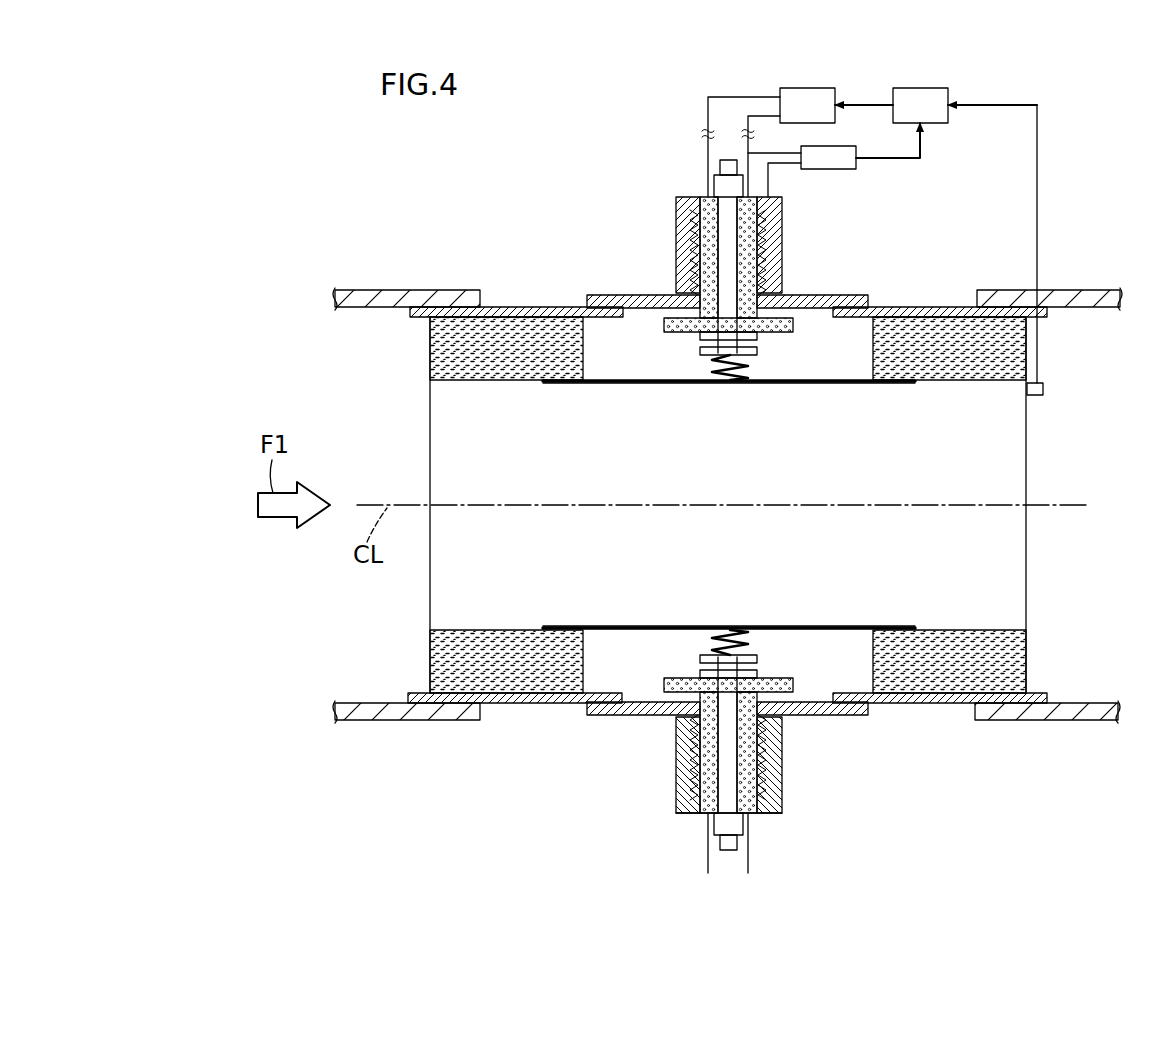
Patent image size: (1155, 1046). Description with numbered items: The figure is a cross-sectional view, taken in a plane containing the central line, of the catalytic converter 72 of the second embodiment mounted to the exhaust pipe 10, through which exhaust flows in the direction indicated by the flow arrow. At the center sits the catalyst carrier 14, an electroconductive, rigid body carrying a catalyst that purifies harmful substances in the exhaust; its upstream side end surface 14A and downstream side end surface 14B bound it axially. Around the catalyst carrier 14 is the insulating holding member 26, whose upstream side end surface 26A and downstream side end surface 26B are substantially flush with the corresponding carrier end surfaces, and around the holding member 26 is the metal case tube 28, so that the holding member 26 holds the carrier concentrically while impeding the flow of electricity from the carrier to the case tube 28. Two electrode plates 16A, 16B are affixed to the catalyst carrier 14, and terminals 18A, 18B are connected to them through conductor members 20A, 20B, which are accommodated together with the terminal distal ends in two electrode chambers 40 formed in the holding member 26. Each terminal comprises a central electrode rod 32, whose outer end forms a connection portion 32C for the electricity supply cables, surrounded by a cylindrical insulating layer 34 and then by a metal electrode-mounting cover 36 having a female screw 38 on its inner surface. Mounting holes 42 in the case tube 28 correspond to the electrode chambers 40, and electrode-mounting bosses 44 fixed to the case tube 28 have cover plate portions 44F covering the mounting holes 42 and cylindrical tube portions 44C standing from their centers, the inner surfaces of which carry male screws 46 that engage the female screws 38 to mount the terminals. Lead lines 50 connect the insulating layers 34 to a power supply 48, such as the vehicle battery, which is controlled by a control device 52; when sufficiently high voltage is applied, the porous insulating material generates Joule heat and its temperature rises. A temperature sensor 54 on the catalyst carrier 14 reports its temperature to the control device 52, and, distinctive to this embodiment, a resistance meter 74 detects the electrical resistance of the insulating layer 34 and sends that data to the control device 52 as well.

The exhaust pipe 10 is at (422, 290).
The case tube 28 is at (507, 720).
The catalyst carrier 14 is at (739, 505).
The upstream side end surface of catalyst carrier 14A is at (430, 420).
The downstream side end surface of catalyst carrier 14B is at (1027, 452).
The electrode plate 16A is at (882, 384).
The electrode plate 16B is at (863, 627).
The terminal 18A is at (733, 506).
The terminal 18B is at (687, 818).
The conductor member 20A is at (715, 367).
The conductor member 20B is at (722, 630).
The holding member 26 is at (737, 505).
The upstream side end surface of holding member 26A is at (430, 348).
The downstream side end surface of holding member 26B is at (1027, 675).
The electrode rod 32 is at (680, 506).
The connection portion 32C is at (720, 165).
The insulating layer 34 is at (700, 207).
The electrode-mounting cover 36 is at (783, 200).
The female screw 38 is at (693, 272).
The electrode chamber 40 is at (640, 349).
The mounting hole 42 is at (837, 317).
The electrode-mounting boss 44 is at (744, 509).
The cylindrical tube portion 44C is at (740, 505).
The cover plate portion 44F is at (603, 296).
The male screw 46 is at (770, 240).
The power supply 48 is at (808, 88).
The lead line 50 is at (708, 100).
The control device 52 is at (916, 88).
The temperature sensor 54 is at (1043, 389).
The catalytic converter 72 is at (1075, 181).
The resistance meter 74 is at (835, 147).